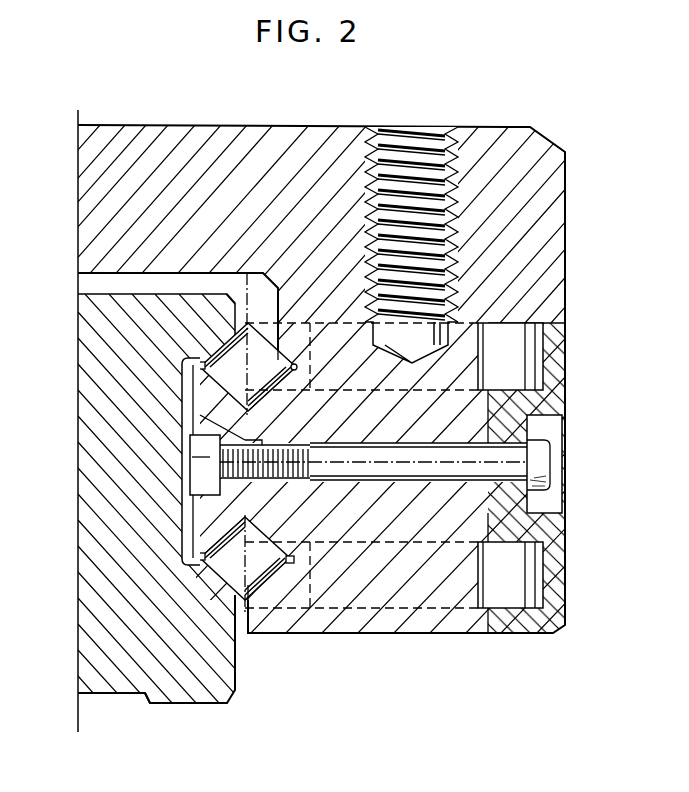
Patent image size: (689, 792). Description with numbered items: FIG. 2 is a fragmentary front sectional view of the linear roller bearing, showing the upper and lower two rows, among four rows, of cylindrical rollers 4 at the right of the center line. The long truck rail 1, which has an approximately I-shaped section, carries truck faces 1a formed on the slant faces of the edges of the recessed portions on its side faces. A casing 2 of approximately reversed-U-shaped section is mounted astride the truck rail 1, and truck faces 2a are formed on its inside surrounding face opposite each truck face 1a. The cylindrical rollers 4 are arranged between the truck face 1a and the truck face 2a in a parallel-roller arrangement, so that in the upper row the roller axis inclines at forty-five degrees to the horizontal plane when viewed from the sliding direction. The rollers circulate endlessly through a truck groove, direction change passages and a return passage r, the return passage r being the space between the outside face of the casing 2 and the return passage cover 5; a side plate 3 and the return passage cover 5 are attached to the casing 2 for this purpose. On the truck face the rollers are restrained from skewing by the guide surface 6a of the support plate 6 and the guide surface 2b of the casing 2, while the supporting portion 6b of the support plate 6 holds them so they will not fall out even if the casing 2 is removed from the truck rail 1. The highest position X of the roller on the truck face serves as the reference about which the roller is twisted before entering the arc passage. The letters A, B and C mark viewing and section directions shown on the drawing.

The truck rail 1 is at (117, 700).
The truck face 1a is at (212, 585).
The casing 2 is at (497, 122).
The truck face 2a is at (243, 413).
The guide surface 2b is at (282, 358).
The side plate 3 is at (562, 430).
The cylindrical roller 4 is at (545, 323).
The return passage cover 5 is at (530, 633).
The support plate 6 is at (242, 403).
The guide surface 6a is at (228, 418).
The supporting portion 6b is at (198, 368).
The highest position of the cylindrical roller X is at (247, 273).
The direction A is at (377, 490).
The direction B is at (330, 260).
The section C is at (455, 320).
The return passage r is at (545, 358).